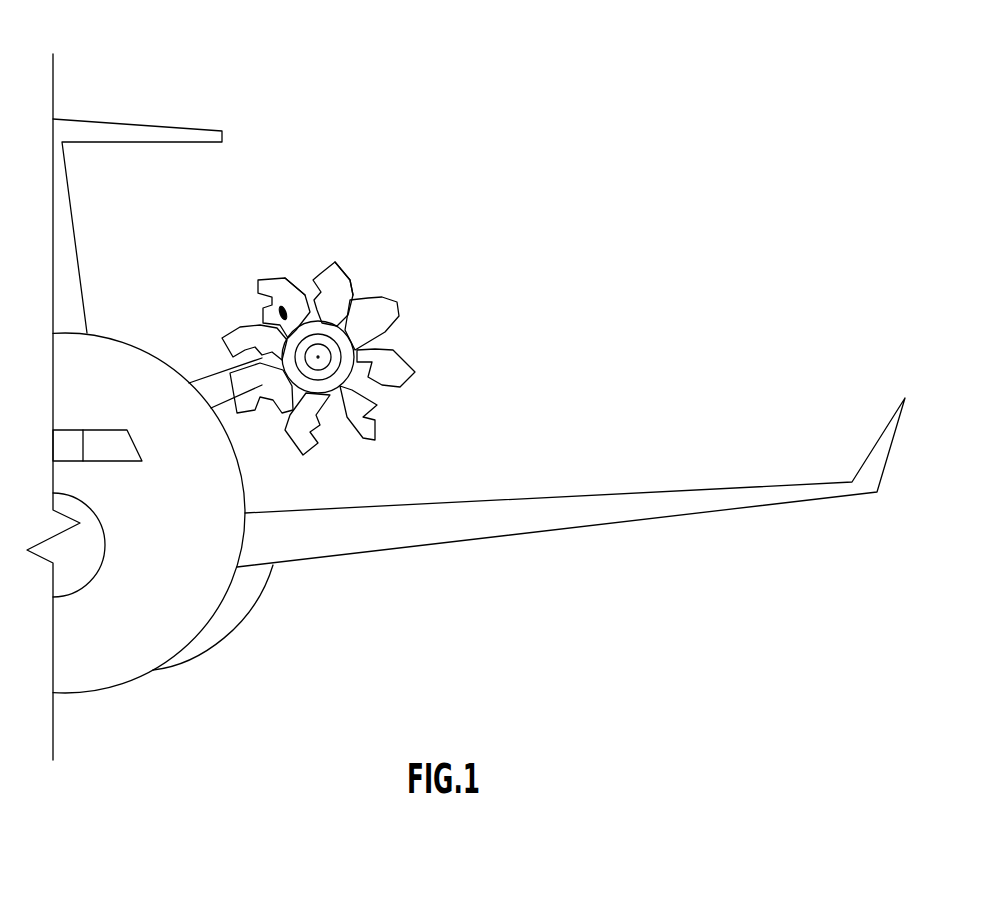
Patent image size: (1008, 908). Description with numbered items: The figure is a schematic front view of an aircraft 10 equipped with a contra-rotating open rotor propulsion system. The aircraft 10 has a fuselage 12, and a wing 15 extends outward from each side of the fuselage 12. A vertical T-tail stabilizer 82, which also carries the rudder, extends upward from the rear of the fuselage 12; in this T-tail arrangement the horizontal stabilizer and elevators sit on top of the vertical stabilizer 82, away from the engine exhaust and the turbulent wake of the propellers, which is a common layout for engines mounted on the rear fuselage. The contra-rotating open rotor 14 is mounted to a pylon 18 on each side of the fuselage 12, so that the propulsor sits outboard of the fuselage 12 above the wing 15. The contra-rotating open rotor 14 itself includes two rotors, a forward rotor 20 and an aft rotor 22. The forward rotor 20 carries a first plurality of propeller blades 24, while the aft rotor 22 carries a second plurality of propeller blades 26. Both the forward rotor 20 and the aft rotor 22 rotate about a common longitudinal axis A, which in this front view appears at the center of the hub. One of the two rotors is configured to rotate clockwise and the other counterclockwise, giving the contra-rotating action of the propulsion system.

The aircraft 10 is at (477, 120).
The aircraft fuselage 12 is at (126, 338).
The contra-rotating open rotor 14 is at (443, 300).
The wing 15 is at (545, 518).
The pylon 18 is at (215, 388).
The forward rotor 20 is at (347, 353).
The aft rotor 22 is at (287, 315).
The first plurality of propeller blades 24 is at (340, 277).
The second plurality of propeller blades 26 is at (310, 288).
The common longitudinal axis A is at (318, 357).
The vertical T-tail stabilizer 82 is at (98, 221).